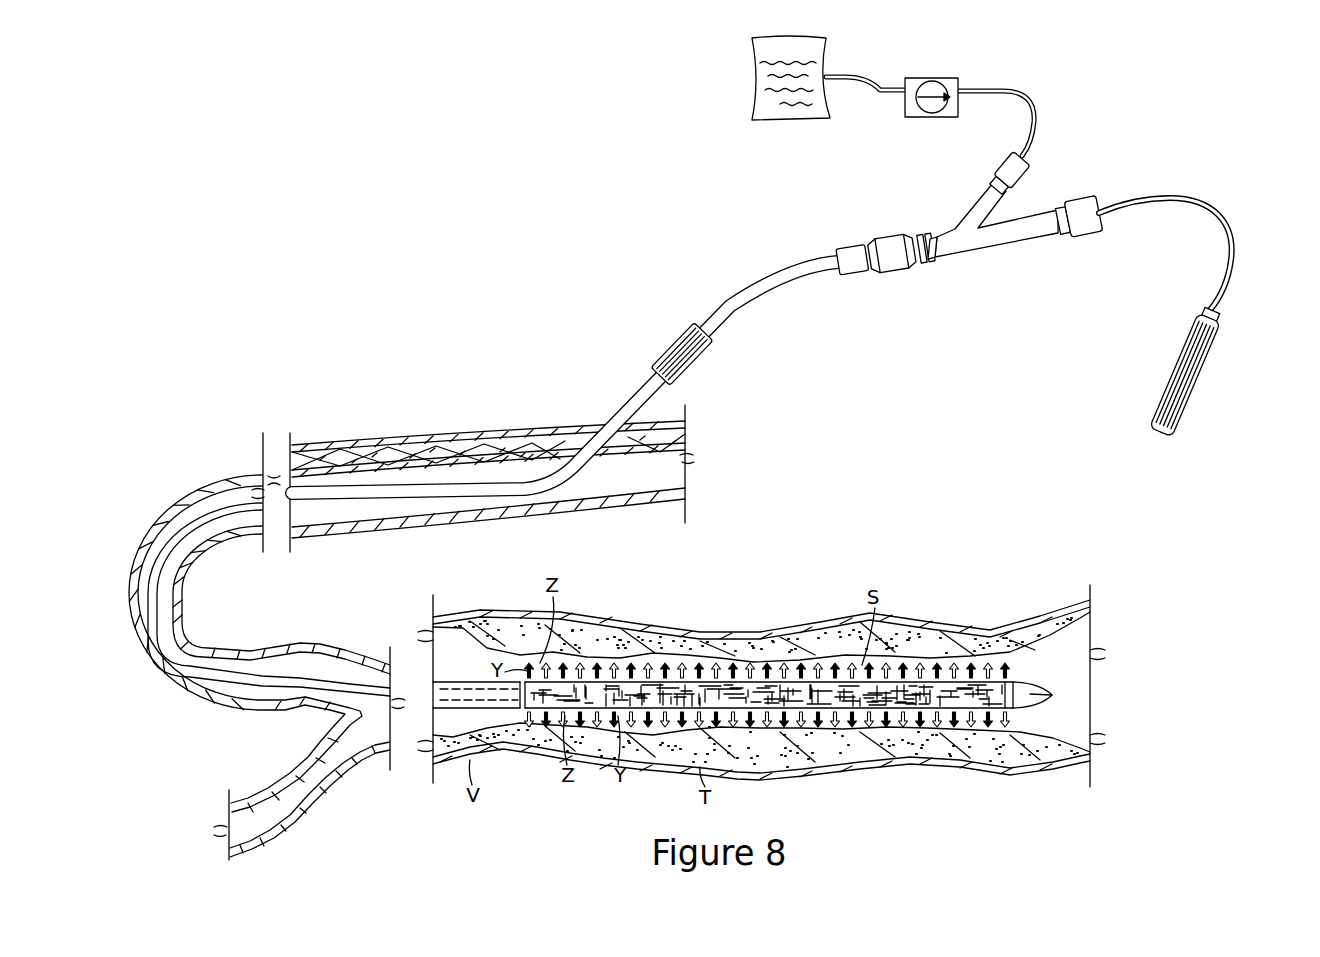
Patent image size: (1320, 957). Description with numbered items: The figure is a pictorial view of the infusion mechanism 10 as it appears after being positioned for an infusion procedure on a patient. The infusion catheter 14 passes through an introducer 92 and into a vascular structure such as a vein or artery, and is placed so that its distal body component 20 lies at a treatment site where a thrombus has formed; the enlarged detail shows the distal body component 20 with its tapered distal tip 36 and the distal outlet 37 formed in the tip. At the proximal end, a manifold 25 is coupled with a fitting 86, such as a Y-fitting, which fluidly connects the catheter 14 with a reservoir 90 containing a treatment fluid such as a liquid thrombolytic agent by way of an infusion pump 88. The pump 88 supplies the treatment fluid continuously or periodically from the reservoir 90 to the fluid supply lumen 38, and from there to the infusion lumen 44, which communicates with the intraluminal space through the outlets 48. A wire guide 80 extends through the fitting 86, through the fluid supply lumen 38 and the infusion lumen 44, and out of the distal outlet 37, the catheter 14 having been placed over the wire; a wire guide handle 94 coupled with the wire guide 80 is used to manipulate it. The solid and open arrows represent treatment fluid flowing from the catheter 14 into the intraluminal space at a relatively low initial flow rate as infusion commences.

The infusion mechanism 10 is at (780, 469).
The infusion catheter 14 is at (553, 524).
The distal body component 20 is at (803, 690).
The manifold 25 is at (884, 281).
The tapered distal tip 36 is at (1047, 690).
The distal outlet 37 is at (1049, 707).
The fluid supply lumen 38 is at (484, 700).
The infusion lumen 44 is at (510, 706).
The outlets 48 is at (697, 690).
The wire guide 80 is at (1236, 235).
The fitting 86 is at (957, 262).
The infusion pump 88 is at (930, 118).
The reservoir 90 is at (780, 121).
The introducer 92 is at (640, 370).
The wire guide handle 94 is at (1202, 365).